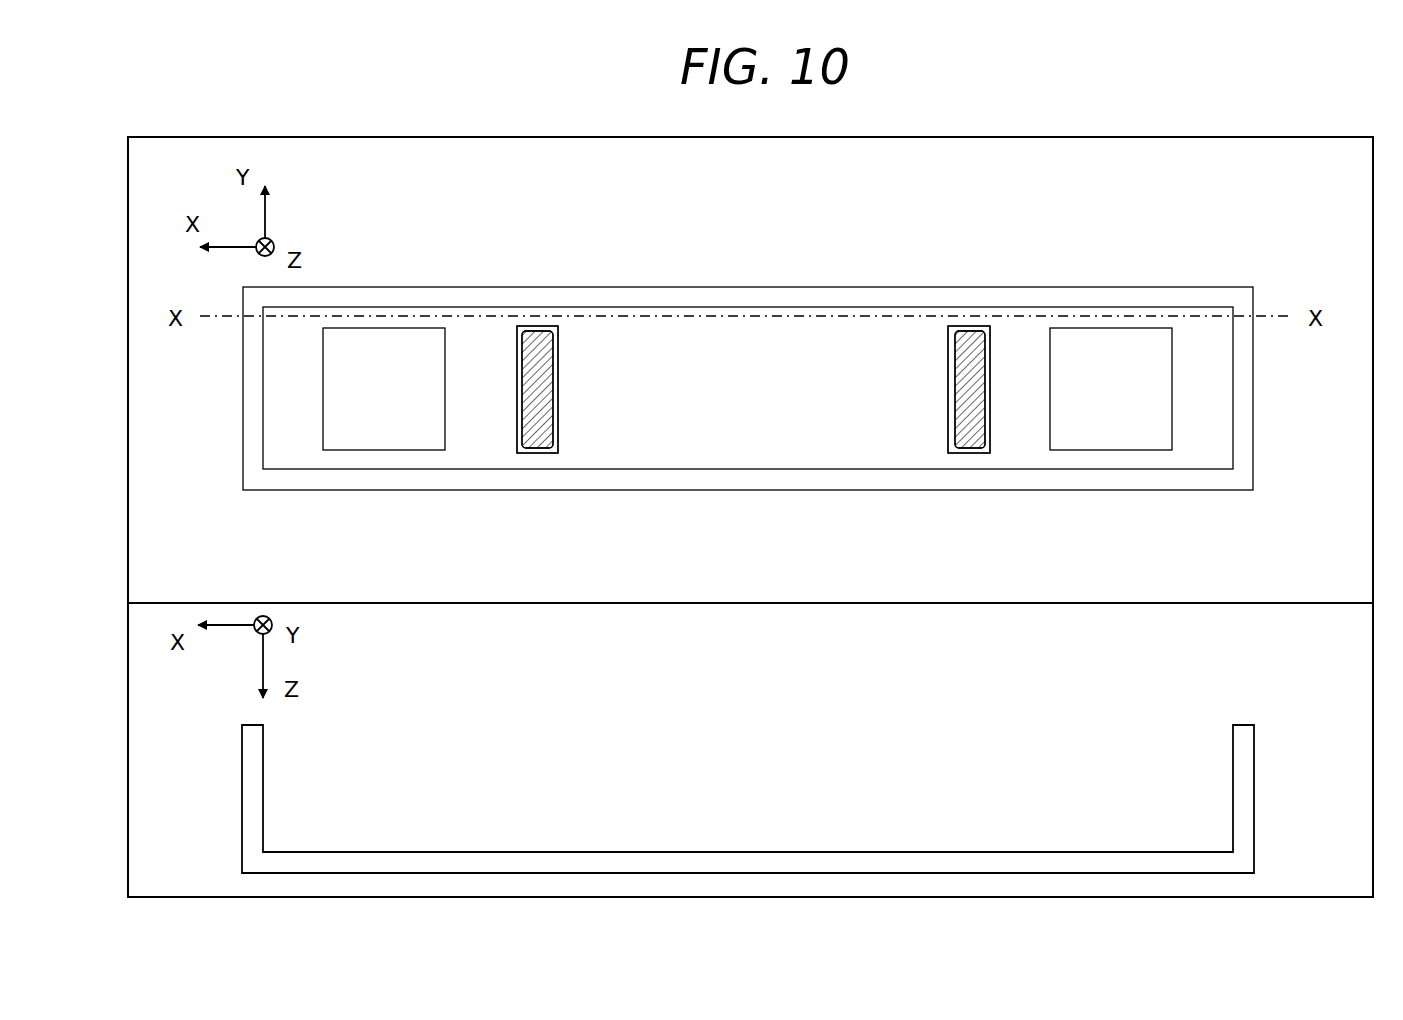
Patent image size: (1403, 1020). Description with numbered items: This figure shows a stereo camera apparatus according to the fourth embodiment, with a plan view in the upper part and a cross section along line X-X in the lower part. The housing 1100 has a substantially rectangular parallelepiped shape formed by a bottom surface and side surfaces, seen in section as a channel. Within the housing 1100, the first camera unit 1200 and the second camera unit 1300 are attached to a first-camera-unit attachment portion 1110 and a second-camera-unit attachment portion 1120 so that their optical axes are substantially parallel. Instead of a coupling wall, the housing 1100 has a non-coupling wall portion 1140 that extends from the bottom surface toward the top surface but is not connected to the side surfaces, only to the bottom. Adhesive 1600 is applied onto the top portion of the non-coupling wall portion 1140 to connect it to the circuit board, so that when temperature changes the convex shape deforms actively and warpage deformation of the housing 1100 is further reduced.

The housing 1100 is at (766, 302).
The first-camera-unit attachment portion 1110 is at (543, 330).
The second-camera-unit attachment portion 1120 is at (538, 316).
The non-coupling wall portion 1140 is at (560, 430).
The first camera unit 1200 is at (1127, 377).
The second camera unit 1300 is at (400, 377).
The adhesive 1600 is at (536, 440).